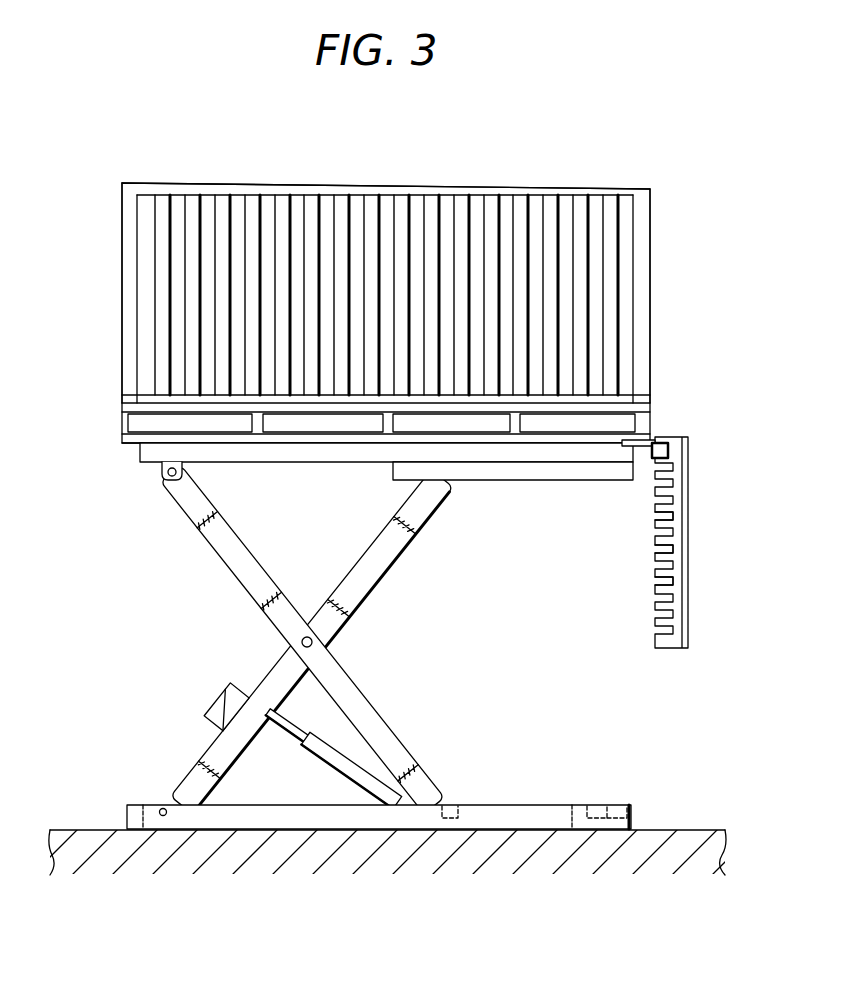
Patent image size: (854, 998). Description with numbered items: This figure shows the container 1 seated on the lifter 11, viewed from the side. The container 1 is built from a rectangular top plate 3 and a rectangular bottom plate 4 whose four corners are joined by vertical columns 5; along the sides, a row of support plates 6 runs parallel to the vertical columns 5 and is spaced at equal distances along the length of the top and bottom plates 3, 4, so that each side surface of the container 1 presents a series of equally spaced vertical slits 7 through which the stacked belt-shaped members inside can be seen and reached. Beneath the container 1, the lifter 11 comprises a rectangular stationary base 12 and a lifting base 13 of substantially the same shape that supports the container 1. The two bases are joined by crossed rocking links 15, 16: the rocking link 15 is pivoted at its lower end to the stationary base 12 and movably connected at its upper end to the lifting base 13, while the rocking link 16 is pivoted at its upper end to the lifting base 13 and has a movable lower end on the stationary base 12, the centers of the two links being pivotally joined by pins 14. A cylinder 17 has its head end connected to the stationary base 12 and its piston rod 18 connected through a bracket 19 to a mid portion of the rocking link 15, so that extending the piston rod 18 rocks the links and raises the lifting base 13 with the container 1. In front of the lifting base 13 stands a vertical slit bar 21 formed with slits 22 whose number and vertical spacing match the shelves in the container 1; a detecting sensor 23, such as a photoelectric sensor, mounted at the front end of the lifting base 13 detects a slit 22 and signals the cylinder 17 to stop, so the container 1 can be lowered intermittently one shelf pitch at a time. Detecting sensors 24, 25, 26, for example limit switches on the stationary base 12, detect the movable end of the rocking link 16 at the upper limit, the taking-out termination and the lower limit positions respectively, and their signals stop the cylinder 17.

The container 1 is at (654, 192).
The top plate 3 is at (552, 190).
The bottom plate 4 is at (622, 394).
The vertical columns 5 is at (122, 273).
The support plates 6 is at (587, 270).
The vertical slits 7 is at (508, 217).
The lifter 11 is at (603, 792).
The stationary base 12 is at (518, 806).
The lifting base 13 is at (300, 455).
The pins 14 is at (312, 637).
The rocking link 15 is at (392, 548).
The rocking link 16 is at (390, 733).
The cylinder 17 is at (323, 762).
The piston rod 18 is at (287, 728).
The bracket 19 is at (205, 718).
The slit bar 21 is at (682, 550).
The slits 22 is at (655, 580).
The detecting sensor 23 is at (659, 447).
The detecting sensor 24 is at (473, 806).
The detecting sensor 25 is at (578, 807).
The detecting sensor 26 is at (632, 812).